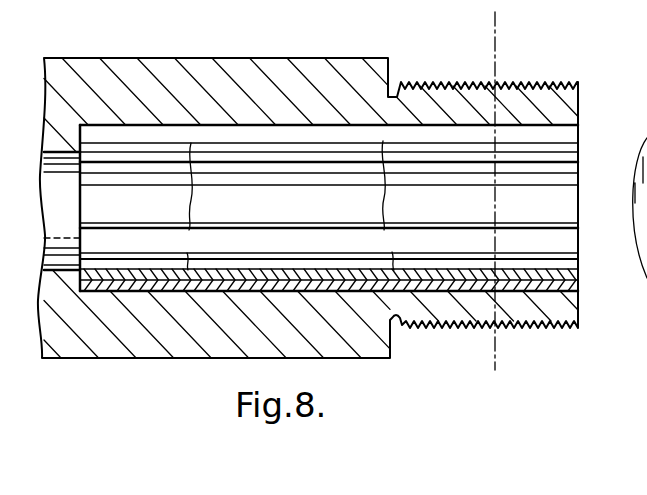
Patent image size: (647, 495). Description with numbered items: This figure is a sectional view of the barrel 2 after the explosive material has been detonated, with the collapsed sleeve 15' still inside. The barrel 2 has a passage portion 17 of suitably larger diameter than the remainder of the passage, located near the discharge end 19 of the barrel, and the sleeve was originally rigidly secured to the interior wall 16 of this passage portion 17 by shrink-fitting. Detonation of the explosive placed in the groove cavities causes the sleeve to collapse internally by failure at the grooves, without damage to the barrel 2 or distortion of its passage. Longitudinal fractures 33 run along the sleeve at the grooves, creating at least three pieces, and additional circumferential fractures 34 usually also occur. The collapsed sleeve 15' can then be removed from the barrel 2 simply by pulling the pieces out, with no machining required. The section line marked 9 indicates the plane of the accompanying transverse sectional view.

The barrel 2 is at (275, 52).
The section line 9- 9 is at (495, 12).
The collapsed sleeve 15' is at (329, 341).
The interior wall 16 is at (150, 129).
The passage portion 17 is at (181, 133).
The discharge end 19 is at (347, 70).
The longitudinal fractures 33 is at (558, 238).
The circumferential fractures 34 is at (193, 200).